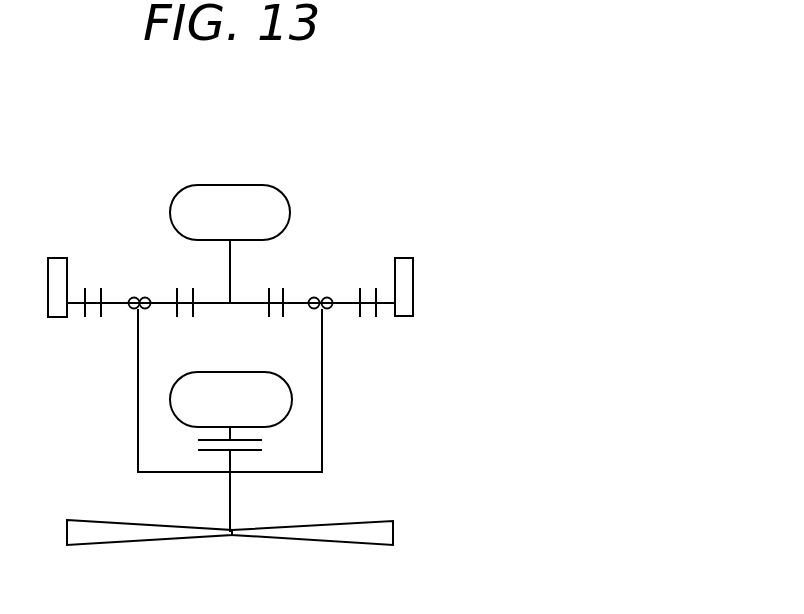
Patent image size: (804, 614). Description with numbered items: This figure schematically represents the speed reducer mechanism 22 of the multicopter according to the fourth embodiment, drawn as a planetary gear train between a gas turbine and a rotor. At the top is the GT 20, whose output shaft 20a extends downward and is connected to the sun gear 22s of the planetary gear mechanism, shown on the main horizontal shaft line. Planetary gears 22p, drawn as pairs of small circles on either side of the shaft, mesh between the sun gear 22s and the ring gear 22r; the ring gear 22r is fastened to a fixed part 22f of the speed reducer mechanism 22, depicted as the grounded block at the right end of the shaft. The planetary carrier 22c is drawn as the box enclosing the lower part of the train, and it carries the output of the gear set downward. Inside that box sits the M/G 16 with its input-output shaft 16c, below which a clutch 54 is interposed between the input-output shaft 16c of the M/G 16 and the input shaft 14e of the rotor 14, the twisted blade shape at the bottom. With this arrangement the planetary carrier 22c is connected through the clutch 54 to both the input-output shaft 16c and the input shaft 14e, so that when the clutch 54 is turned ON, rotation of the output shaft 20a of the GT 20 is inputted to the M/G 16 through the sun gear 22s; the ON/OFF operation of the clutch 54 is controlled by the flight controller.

The speed reducer mechanism 22 is at (393, 199).
The GT 20 is at (290, 204).
The output shaft 20a is at (233, 270).
The planetary gear 22p is at (133, 297).
The fixed part 22f is at (403, 258).
The ring gear 22r is at (385, 305).
The sun gear 22s is at (212, 305).
The planetary carrier 22c is at (138, 387).
The M/G 16 is at (243, 370).
The input-output shaft 16c is at (230, 435).
The clutch 54 is at (262, 445).
The input shaft 14e is at (232, 508).
The rotor 14 is at (393, 525).